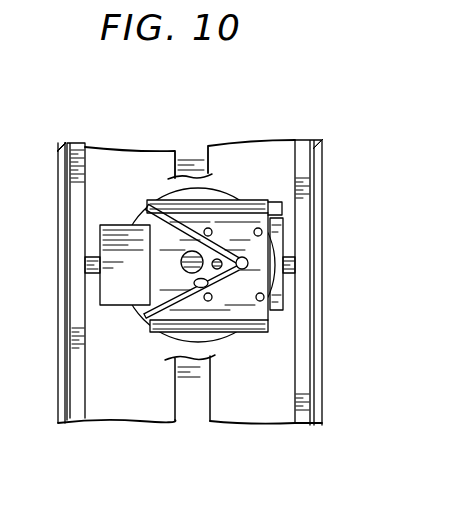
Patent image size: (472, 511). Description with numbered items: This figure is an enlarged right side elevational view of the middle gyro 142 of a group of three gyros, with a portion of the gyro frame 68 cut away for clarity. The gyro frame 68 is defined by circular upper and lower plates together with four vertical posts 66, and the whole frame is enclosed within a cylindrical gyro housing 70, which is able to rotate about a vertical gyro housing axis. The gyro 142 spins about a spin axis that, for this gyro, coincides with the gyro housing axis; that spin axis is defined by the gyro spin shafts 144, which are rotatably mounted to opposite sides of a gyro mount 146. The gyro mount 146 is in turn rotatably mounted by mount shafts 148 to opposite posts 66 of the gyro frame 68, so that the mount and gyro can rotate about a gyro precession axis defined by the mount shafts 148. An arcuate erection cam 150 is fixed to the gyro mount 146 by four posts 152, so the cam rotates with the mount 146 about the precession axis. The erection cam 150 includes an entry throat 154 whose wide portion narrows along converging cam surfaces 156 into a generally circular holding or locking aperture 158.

The vertical post 66 is at (68, 197).
The gyro frame 68 is at (292, 173).
The gyro housing 70 is at (320, 154).
The gyro 142 is at (237, 337).
The gyro spin shaft 144 is at (148, 313).
The gyro mount 146 is at (118, 225).
The mount shaft 148 is at (283, 260).
The erection cam 150 is at (283, 207).
The post 152 is at (256, 228).
The entry throat 154 is at (170, 233).
The cam surface 156 is at (208, 283).
The locking aperture 158 is at (242, 257).